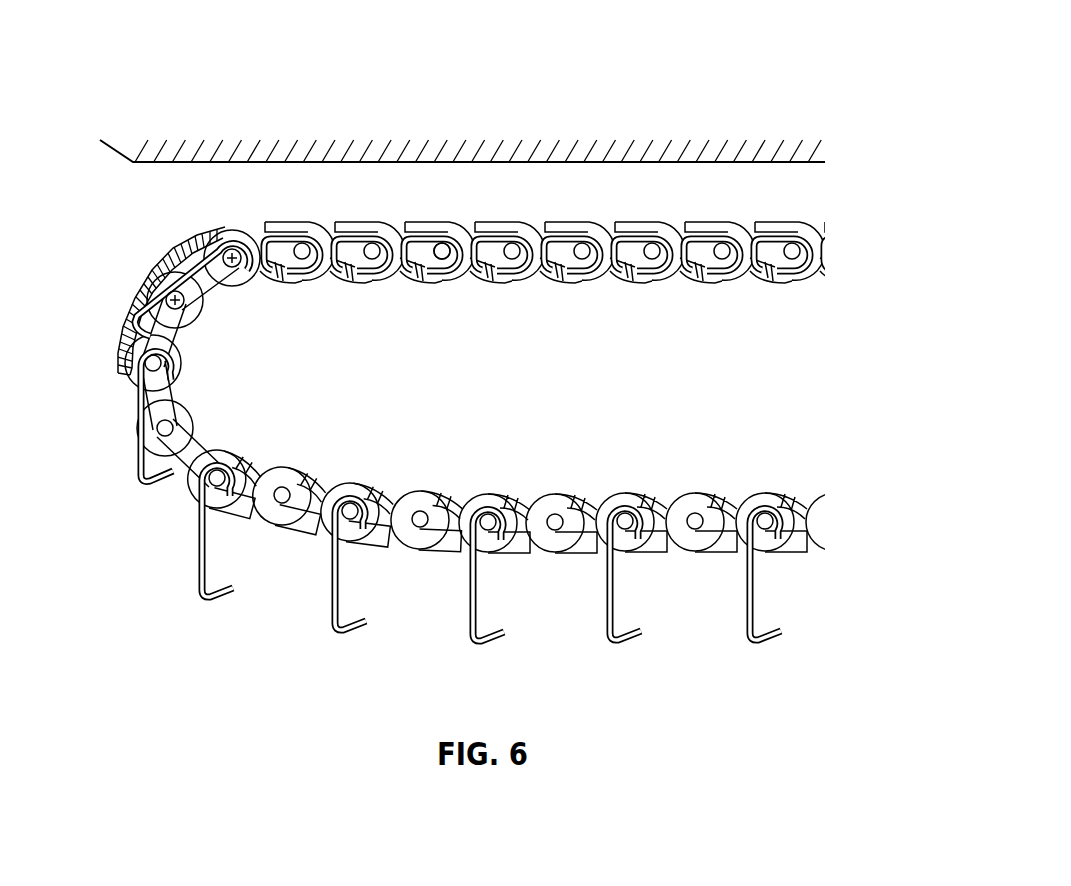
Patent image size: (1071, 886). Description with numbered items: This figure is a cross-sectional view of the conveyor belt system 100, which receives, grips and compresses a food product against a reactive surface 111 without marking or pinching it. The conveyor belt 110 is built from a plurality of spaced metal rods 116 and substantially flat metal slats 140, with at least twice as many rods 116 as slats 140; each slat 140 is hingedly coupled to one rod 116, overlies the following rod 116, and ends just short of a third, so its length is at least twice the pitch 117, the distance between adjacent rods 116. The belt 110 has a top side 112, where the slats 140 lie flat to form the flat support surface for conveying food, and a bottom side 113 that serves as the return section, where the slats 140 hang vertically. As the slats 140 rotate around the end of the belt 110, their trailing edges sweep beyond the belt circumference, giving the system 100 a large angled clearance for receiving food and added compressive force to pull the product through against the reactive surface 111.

The conveyor belt system 100 is at (77, 70).
The conveyor belt 110 is at (138, 536).
The reactive surface 111 is at (518, 118).
The top side 112 is at (703, 203).
The bottom side 113 is at (305, 629).
The spaced metal rods 116 is at (443, 252).
The pitch 117 is at (181, 306).
The metal slats 140 is at (481, 243).